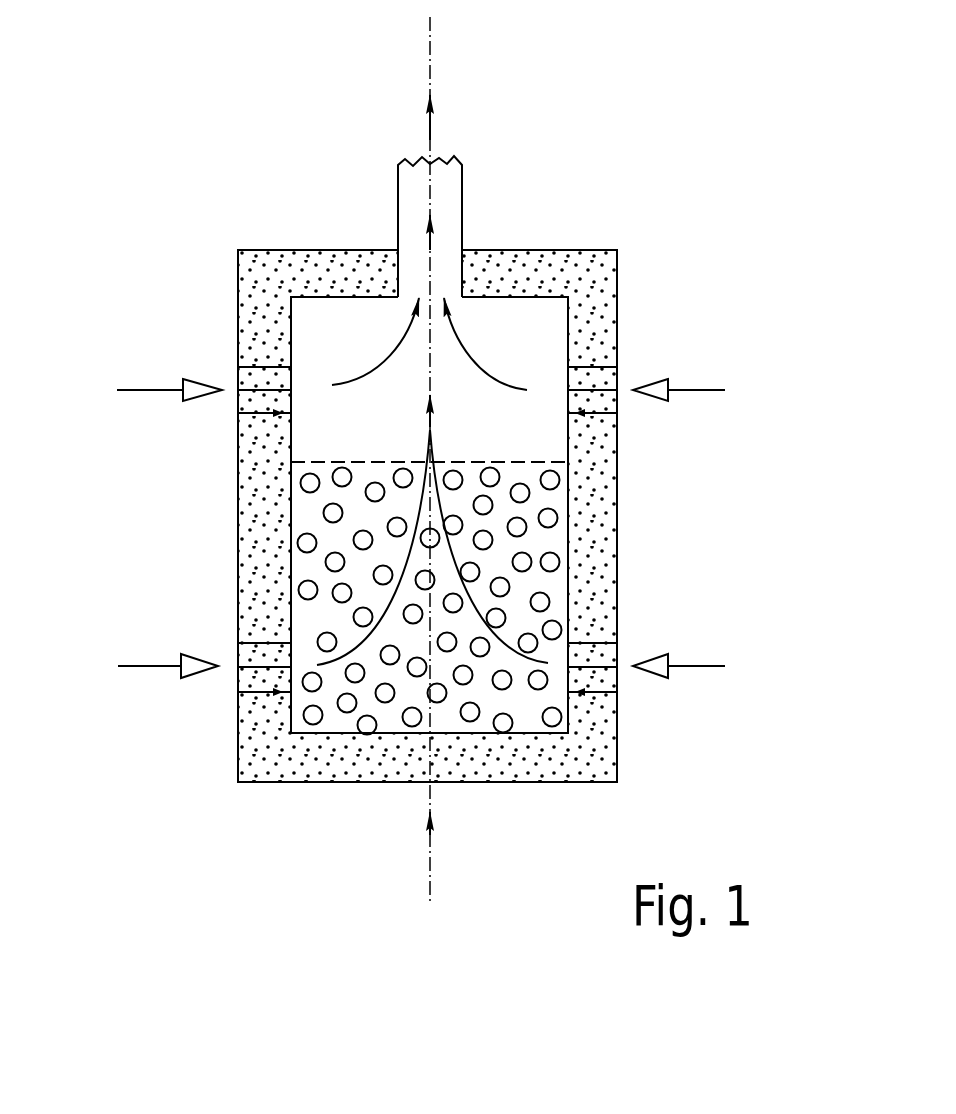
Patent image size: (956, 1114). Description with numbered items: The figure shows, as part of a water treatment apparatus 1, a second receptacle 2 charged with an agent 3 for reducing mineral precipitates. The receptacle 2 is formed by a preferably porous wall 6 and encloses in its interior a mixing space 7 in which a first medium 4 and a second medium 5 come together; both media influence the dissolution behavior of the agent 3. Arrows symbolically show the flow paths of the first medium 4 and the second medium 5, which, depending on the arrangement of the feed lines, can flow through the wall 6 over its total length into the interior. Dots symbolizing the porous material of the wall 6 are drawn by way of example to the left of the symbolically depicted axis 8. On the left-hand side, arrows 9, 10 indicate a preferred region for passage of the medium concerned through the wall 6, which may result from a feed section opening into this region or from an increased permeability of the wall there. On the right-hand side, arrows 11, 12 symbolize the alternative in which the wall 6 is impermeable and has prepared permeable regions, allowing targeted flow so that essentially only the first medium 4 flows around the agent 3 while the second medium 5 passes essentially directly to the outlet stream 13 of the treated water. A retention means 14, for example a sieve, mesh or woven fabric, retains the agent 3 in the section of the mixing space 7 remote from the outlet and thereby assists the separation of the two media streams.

The water treatment apparatus 1 is at (282, 138).
The second receptacle 2 is at (552, 180).
The agent for reducing mineral precipitates 3 is at (518, 488).
The first medium 4 is at (150, 666).
The second medium 5 is at (155, 390).
The wall 6 is at (320, 268).
The mixing space 7 is at (538, 443).
The axis 8 is at (433, 63).
The arrow 9 is at (213, 698).
The arrow 10 is at (212, 420).
The arrow 11 is at (643, 697).
The arrow 12 is at (640, 358).
The outlet stream 13 is at (428, 125).
The retention means 14 is at (348, 462).